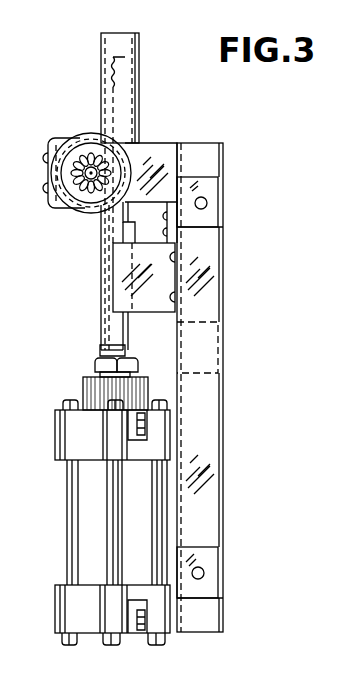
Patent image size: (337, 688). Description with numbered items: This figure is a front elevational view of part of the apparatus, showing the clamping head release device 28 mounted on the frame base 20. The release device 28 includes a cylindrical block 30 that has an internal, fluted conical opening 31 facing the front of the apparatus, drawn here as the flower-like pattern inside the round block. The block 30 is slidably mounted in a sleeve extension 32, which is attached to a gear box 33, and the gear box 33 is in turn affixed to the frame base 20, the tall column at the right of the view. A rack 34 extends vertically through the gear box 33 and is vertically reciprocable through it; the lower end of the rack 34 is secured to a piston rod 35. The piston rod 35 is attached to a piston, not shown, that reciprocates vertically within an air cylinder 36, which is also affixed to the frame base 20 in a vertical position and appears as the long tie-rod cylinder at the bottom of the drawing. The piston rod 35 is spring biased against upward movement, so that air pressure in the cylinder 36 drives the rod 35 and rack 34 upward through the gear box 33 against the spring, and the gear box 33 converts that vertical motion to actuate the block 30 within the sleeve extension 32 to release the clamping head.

The frame base 20 is at (224, 232).
The clamping head release device 28 is at (72, 179).
The cylindrical block 30 is at (80, 140).
The fluted conical opening 31 is at (75, 165).
The sleeve extension 32 is at (80, 203).
The gear box 33 is at (152, 143).
The rack 34 is at (130, 210).
The piston rod 35 is at (95, 366).
The air cylinder 36 is at (85, 515).